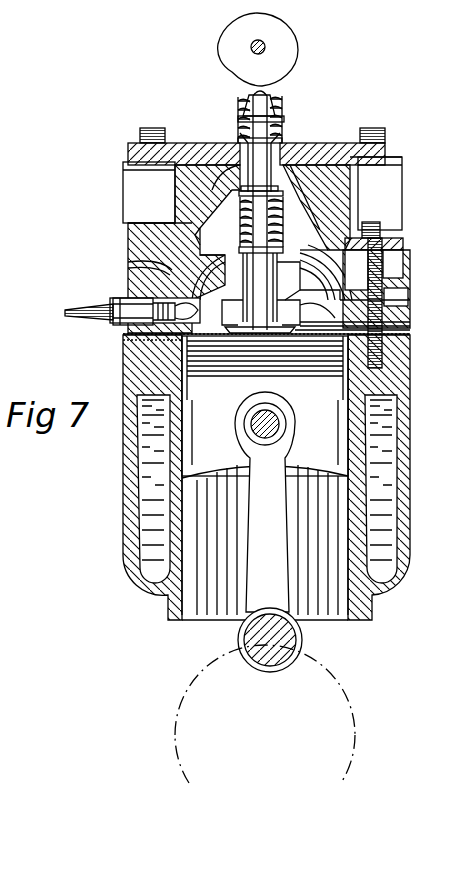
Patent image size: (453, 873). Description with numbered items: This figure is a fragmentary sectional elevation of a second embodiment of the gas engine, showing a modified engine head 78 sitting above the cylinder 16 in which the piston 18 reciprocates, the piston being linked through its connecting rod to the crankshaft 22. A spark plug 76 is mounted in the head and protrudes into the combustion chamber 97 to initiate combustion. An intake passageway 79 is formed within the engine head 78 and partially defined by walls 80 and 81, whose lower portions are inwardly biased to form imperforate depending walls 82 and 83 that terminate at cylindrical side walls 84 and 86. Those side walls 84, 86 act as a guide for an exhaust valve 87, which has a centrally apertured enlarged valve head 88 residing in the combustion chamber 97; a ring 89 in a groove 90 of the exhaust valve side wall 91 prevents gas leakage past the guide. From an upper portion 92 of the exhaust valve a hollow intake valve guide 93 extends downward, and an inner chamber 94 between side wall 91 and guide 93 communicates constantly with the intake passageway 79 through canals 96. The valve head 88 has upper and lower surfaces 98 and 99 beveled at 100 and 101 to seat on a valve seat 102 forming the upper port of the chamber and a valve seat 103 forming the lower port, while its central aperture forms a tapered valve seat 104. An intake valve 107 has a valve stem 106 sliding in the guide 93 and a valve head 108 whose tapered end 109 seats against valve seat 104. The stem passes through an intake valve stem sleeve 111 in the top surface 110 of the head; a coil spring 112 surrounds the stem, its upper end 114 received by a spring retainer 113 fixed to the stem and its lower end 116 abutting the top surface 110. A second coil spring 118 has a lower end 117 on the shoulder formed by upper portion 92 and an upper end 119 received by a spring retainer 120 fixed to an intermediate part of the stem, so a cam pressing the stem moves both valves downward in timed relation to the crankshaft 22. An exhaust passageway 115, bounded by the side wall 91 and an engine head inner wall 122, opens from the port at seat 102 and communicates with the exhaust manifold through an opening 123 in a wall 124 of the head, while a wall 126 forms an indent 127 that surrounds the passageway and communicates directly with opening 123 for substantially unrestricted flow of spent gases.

The cylinder 16 is at (273, 532).
The piston 18 is at (265, 475).
The crankshaft 22 is at (298, 634).
The spark plug 76 is at (85, 309).
The engine head 78 is at (135, 248).
The intake passageway 79 is at (128, 183).
The wall 80 is at (316, 182).
The wall 81 is at (198, 232).
The imperforate depending wall 82 is at (324, 250).
The imperforate depending wall 83 is at (233, 256).
The side wall 84 is at (330, 291).
The side wall 86 is at (210, 296).
The exhaust valve 87 is at (296, 285).
The valve head 88 is at (205, 344).
The ring 89 is at (240, 311).
The groove 90 is at (283, 313).
The side wall 91 is at (243, 285).
The upper portion 92 is at (243, 246).
The intake valve guide 93 is at (248, 327).
The inner chamber 94 is at (316, 321).
The canal 96 is at (306, 240).
The combustion chamber 97 is at (402, 322).
The upper surface 98 is at (400, 312).
The lower surface 99 is at (308, 371).
The taper 100 is at (400, 331).
The taper 101 is at (400, 336).
The valve seat 102 is at (400, 300).
The valve seat 103 is at (183, 345).
The valve seat 104 is at (226, 351).
The valve stem 106 is at (243, 141).
The intake valve 107 is at (232, 176).
The valve head 108 is at (283, 366).
The tapered end 109 is at (248, 361).
The top surface 110 is at (334, 143).
The intake valve stem sleeve 111 is at (296, 143).
The coil spring 112 is at (284, 118).
The spring retainer 113 is at (252, 91).
The upper end 114 is at (283, 99).
The exhaust passageway 115 is at (138, 298).
The lower end 116 is at (283, 140).
The lower end 117 is at (284, 220).
The second coil spring 118 is at (240, 204).
The upper end 119 is at (296, 173).
The spring retainer 120 is at (243, 190).
The engine head inner wall 122 is at (200, 305).
The opening 123 is at (403, 264).
The wall 124 is at (383, 285).
The wall 126 is at (128, 232).
The indent 127 is at (128, 263).